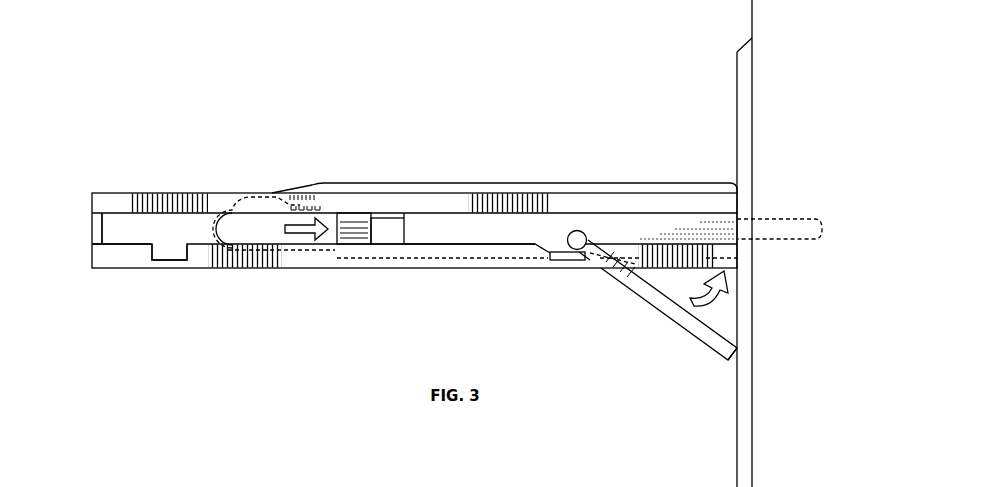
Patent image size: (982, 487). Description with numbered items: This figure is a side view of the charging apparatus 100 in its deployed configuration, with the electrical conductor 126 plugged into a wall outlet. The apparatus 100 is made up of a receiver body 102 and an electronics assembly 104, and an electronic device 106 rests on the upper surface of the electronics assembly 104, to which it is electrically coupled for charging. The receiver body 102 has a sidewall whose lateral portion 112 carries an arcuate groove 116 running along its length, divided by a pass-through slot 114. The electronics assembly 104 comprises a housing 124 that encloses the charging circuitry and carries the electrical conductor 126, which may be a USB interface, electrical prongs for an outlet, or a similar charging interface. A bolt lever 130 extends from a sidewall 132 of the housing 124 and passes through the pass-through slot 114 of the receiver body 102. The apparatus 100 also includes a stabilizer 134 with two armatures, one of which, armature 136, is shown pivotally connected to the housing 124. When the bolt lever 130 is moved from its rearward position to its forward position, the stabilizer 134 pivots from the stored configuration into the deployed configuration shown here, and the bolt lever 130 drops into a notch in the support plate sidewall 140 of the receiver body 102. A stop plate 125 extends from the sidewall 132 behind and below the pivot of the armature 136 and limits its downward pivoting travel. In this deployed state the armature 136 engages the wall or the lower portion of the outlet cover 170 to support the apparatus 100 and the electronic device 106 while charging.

The charging apparatus 100 is at (602, 133).
The receiver body 102 is at (328, 280).
The electronics assembly 104 is at (648, 190).
The electronic device 106 is at (723, 190).
The lateral portion 112 is at (182, 279).
The pass-through slot 114 is at (122, 226).
The arcuate groove 116 is at (122, 262).
The housing 124 is at (493, 232).
The stop plate 125 is at (565, 257).
The electrical conductor 126 is at (816, 186).
The bolt lever 130 is at (390, 238).
The sidewall 132 is at (352, 236).
The stabilizer 134 is at (672, 345).
The armature 136 is at (713, 342).
The support plate sidewall 140 is at (727, 255).
The outlet cover 170 is at (752, 70).